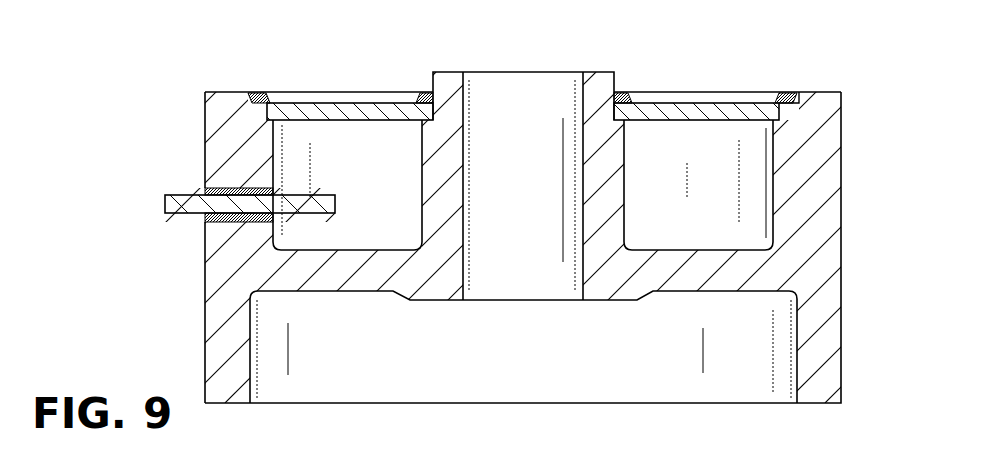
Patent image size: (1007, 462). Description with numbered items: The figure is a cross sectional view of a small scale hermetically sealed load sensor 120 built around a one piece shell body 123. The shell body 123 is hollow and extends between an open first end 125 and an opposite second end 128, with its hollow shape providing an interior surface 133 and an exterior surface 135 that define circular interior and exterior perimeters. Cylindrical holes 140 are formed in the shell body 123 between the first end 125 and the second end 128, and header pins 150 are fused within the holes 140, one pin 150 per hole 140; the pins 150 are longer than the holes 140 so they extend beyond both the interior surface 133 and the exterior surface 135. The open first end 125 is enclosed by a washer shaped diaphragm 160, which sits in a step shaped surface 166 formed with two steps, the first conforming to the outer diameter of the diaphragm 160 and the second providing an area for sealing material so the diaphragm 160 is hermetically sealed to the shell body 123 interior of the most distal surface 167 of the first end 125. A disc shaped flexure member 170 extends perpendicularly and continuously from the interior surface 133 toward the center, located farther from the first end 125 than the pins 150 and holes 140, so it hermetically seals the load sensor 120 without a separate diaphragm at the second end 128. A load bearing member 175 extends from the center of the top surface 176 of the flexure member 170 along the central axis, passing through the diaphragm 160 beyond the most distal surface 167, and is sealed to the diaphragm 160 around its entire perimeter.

The small scale hermetically sealed load sensor 120 is at (126, 91).
The one piece shell body 123 is at (817, 245).
The open first end 125 is at (828, 107).
The second end 128 is at (823, 347).
The interior surface 133 is at (205, 128).
The exterior surface 135 is at (273, 163).
The cylindrical holes 140 is at (230, 187).
The header pins 150 is at (205, 215).
The washer shaped diaphragm 160 is at (288, 108).
The step shaped surface 166 is at (790, 98).
The most distal surface 167 is at (797, 110).
The disc shaped flexure member 170 is at (333, 282).
The load bearing member 175 is at (604, 84).
The top surface 176 is at (735, 249).